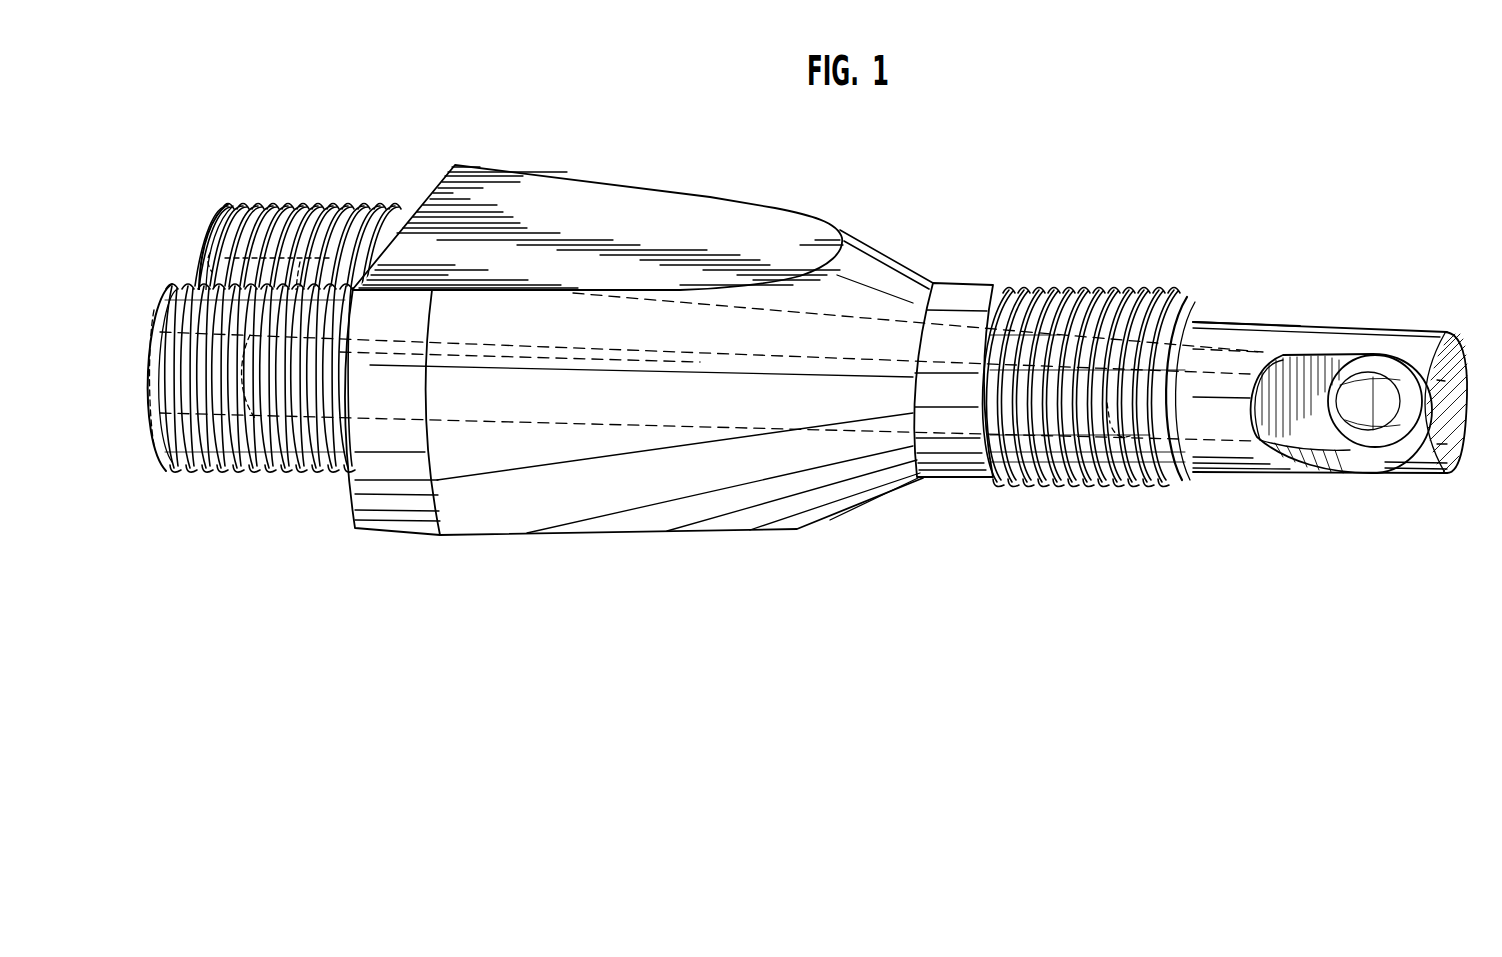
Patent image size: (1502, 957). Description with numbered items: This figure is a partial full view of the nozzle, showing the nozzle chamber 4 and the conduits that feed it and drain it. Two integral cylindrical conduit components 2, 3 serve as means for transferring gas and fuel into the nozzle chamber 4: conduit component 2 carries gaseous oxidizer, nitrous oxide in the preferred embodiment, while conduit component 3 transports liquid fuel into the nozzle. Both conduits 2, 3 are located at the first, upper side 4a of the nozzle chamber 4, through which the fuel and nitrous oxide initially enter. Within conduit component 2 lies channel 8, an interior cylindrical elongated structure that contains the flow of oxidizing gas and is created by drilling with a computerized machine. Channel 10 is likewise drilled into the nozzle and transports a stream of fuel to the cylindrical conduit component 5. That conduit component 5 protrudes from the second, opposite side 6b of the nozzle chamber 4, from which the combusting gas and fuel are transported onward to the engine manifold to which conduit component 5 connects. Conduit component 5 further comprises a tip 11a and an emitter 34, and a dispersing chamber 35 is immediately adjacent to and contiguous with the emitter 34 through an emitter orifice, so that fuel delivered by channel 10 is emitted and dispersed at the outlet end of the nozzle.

The cylindrical conduit component 2 is at (332, 204).
The cylindrical conduit component 3 is at (230, 475).
The nozzle chamber 4 is at (803, 309).
The first upper side 4a is at (418, 205).
The cylindrical conduit component 5 is at (1347, 387).
The second opposite side 6b is at (1250, 320).
The channel 8 is at (1060, 340).
The channel 10 is at (395, 388).
The tip 11a is at (1457, 437).
The emitter 34 is at (1350, 403).
The dispersing chamber 35 is at (1343, 462).